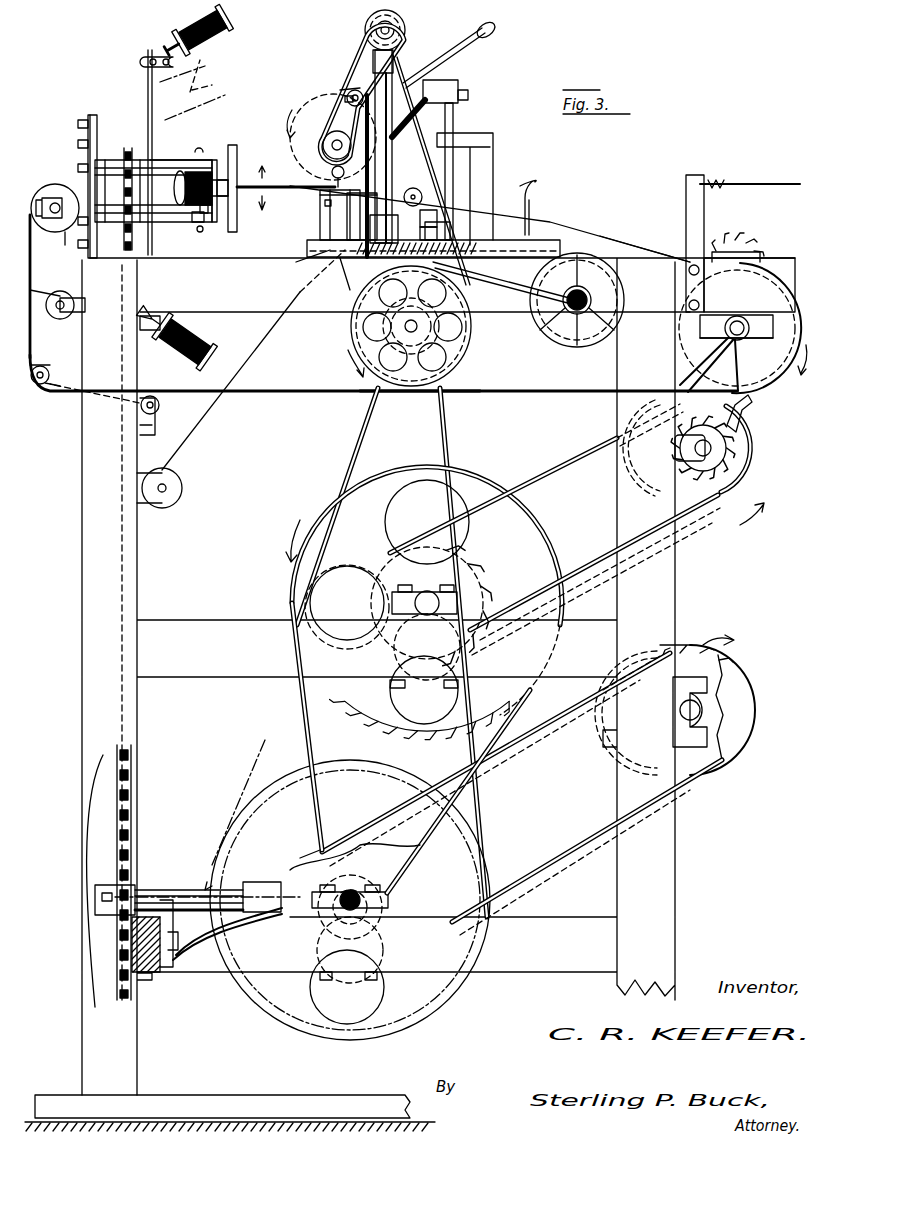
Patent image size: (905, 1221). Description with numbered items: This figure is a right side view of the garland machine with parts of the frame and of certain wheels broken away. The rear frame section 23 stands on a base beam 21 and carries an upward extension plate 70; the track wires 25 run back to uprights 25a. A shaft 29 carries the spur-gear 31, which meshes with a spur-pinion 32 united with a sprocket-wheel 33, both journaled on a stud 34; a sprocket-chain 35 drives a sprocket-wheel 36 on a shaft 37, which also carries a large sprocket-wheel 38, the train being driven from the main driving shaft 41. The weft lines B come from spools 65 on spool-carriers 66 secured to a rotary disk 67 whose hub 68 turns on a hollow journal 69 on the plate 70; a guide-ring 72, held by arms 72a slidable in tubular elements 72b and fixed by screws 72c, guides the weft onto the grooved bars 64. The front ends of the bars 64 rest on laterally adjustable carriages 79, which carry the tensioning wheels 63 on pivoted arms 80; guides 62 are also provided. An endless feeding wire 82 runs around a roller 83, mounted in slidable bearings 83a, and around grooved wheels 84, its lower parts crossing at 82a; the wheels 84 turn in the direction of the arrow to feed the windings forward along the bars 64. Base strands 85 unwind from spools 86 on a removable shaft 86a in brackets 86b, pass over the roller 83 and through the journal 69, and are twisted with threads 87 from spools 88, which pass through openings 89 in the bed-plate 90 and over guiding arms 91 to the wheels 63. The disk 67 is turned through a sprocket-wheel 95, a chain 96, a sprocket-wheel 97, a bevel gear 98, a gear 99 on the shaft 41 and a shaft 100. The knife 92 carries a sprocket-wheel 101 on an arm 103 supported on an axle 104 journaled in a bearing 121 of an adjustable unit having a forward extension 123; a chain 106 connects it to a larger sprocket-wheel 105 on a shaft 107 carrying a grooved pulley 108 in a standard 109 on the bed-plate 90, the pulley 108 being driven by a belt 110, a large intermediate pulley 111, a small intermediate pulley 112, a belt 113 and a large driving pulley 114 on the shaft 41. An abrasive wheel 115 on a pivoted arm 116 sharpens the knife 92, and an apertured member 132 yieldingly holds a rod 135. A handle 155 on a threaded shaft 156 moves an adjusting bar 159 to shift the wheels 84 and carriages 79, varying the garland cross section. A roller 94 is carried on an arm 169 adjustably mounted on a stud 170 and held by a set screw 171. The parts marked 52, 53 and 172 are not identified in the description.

The base beam 21 is at (288, 1102).
The rear frame section 23 is at (110, 775).
The track wires 25 is at (735, 184).
The uprights 25a is at (705, 205).
The shaft 29 is at (747, 320).
The spur-gear 31 is at (748, 245).
The spur-pinion 32 is at (748, 426).
The sprocket-wheel 33 is at (735, 440).
The stud 34 is at (730, 450).
The sprocket-chain 35 is at (550, 545).
The sprocket-wheel 36 is at (470, 580).
The shaft 37 is at (445, 600).
The sprocket-wheel 38 is at (518, 695).
The main driving shaft 41 is at (362, 900).
The sprocket 52 is at (700, 708).
The hub 53 is at (710, 722).
The guide 62 is at (530, 192).
The tensioning wheels 63 is at (333, 177).
The grooved bars 64 is at (228, 196).
The spools 65 is at (228, 37).
The spool-carriers 66 is at (190, 82).
The rotary disk 67 is at (152, 112).
The hub 68 is at (195, 220).
The hollow journal 69 is at (203, 226).
The plate 70 is at (88, 133).
The guide-ring 72 is at (237, 158).
The parallel arms 72a is at (215, 160).
The tubular elements 72b is at (170, 158).
The screws 72c is at (204, 232).
The carriages 79 is at (301, 262).
The pivotally mounted arms 80 is at (347, 205).
The endless feeding wire 82 is at (33, 340).
The crossing point 82a is at (410, 393).
The roller 83 is at (72, 232).
The slidable bearings 83a is at (53, 196).
The grooved wheels 84 is at (770, 385).
The base strands 85 is at (33, 262).
The spools 86 is at (78, 280).
The removable shaft 86a is at (70, 305).
The brackets 86b is at (72, 312).
The threads 87 is at (195, 428).
The spools 88 is at (182, 489).
The openings 89 is at (307, 245).
The bed-plate 90 is at (342, 258).
The guiding arms 91 is at (320, 197).
The knife 92 is at (262, 185).
The roller 94 is at (48, 372).
The sprocket-wheel 95 is at (130, 147).
The chain 96 is at (131, 795).
The sprocket-wheel 97 is at (125, 995).
The gear wheel 98 is at (300, 868).
The gear 99 is at (380, 845).
The shaft 100 is at (197, 827).
The sprocket-wheel 101 is at (331, 137).
The arm 103 is at (460, 85).
The axle 104 is at (453, 125).
The sprocket-wheel 105 is at (358, 45).
The driving chain 106 is at (350, 78).
The shaft 107 is at (402, 23).
The grooved pulley 108 is at (398, 30).
The standard 109 is at (380, 163).
The belt 110 is at (437, 162).
The intermediate pulley 111 is at (462, 324).
The intermediate pulley 112 is at (430, 330).
The belt 113 is at (432, 450).
The driving pulley 114 is at (470, 840).
The abrasive wheel 115 is at (344, 98).
The arm 116 is at (355, 90).
The bearing 121 is at (480, 134).
The forward extension 123 is at (580, 238).
The apertured element 132 is at (434, 212).
The rod 135 is at (420, 222).
The handle 155 is at (556, 340).
The shaft 156 is at (576, 288).
The adjusting bar 159 is at (455, 235).
The arm 169 is at (62, 388).
The stud 170 is at (157, 414).
The set screw 171 is at (160, 405).
The roller 172 is at (421, 190).
The weft lines B is at (213, 72).